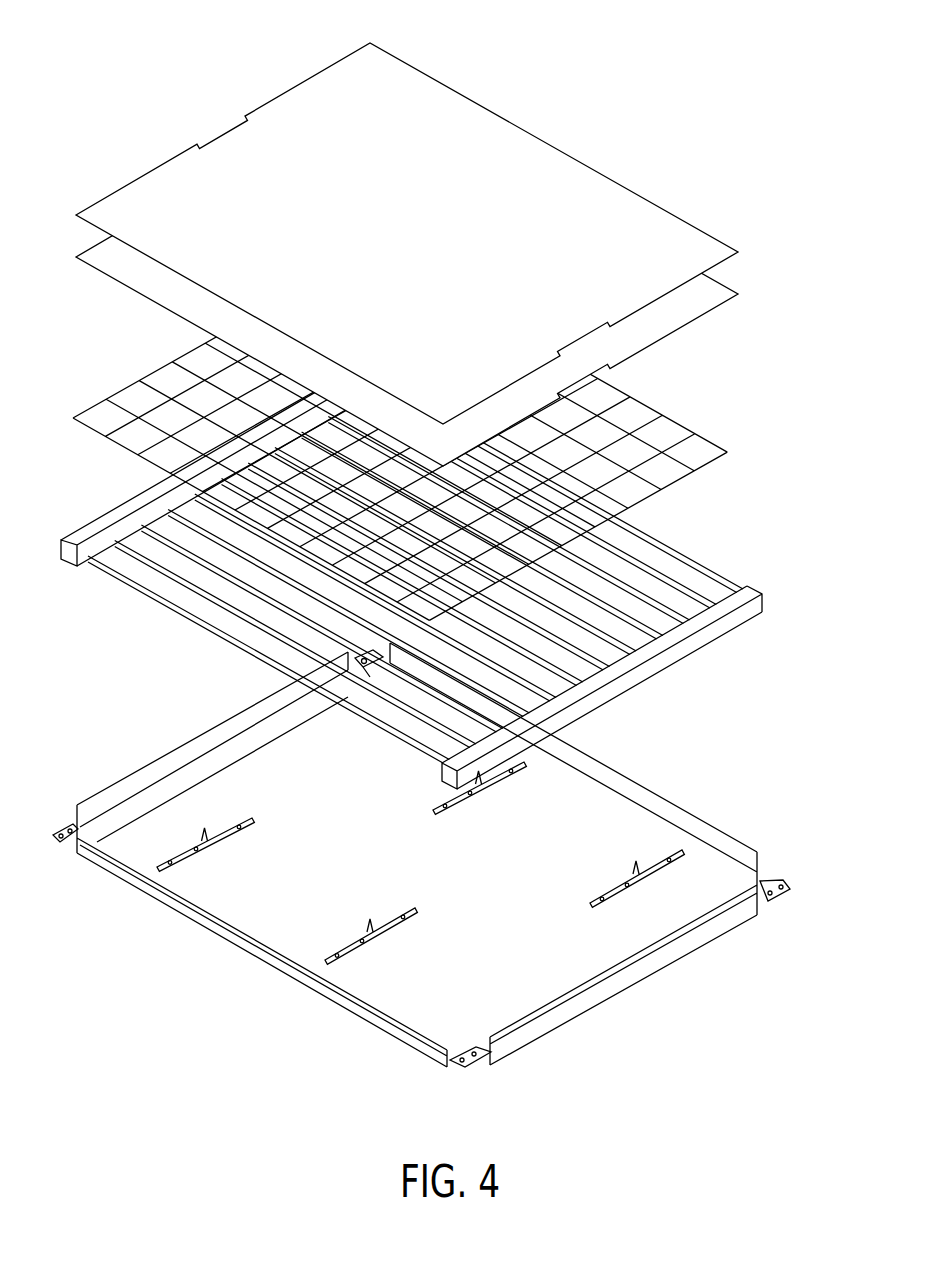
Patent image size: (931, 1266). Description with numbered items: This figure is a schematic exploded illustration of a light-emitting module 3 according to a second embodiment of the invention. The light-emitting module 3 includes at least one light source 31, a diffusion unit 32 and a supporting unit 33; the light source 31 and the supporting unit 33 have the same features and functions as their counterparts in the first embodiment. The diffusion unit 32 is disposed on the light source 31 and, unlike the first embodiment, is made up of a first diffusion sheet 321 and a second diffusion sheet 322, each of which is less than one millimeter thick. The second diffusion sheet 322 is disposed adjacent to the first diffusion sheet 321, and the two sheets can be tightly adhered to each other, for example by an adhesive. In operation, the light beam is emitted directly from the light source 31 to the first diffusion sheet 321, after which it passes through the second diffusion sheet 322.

The light-emitting module 3 is at (433, 541).
The light source 31 is at (710, 573).
The diffusion unit 32 is at (457, 254).
The first diffusion sheet 321 is at (720, 290).
The second diffusion sheet 322 is at (717, 252).
The supporting unit 33 is at (683, 480).